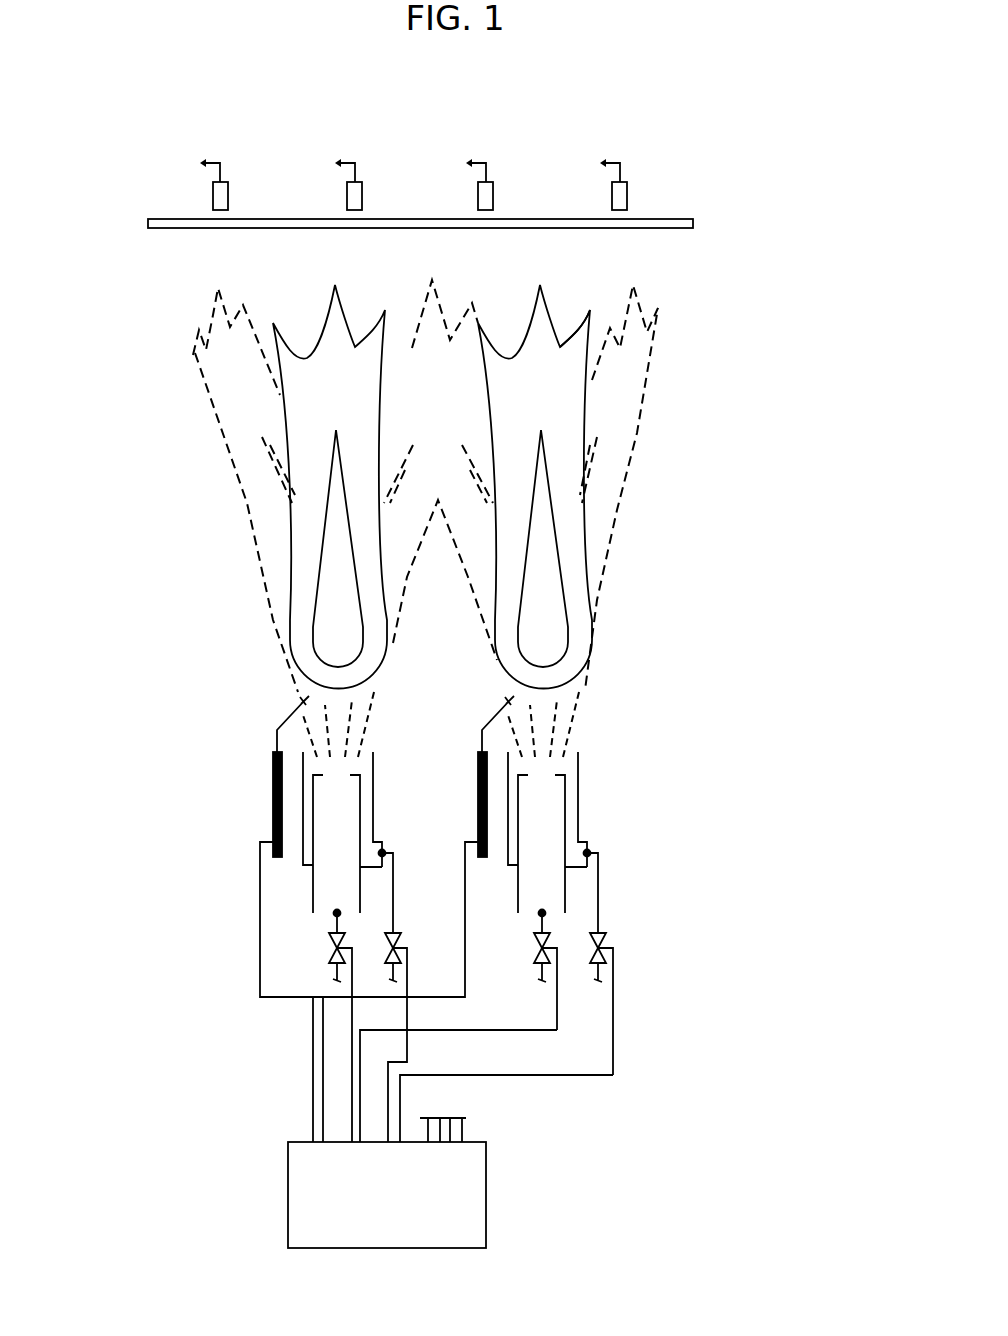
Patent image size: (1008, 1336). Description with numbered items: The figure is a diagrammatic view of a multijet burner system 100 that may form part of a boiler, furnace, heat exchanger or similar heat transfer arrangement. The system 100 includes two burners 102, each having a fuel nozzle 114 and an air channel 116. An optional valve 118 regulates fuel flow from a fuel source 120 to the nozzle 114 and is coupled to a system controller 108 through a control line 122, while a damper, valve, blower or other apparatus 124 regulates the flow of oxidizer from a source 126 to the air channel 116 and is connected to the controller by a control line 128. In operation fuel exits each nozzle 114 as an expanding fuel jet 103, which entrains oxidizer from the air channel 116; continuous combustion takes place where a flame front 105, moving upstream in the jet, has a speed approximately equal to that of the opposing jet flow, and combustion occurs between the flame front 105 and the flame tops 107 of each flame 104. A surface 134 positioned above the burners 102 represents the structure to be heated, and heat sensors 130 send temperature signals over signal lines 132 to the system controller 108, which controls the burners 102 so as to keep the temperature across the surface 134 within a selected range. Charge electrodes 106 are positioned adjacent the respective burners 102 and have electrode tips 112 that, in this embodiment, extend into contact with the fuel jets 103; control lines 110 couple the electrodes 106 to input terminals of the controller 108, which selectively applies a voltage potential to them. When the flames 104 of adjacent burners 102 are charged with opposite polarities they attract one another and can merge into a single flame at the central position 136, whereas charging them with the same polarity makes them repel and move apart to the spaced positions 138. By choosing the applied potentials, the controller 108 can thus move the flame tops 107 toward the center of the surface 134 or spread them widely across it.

The multijet burner system 100 is at (745, 190).
The burner 102 is at (230, 793).
The fuel jet 103 is at (566, 710).
The flame 104 is at (298, 545).
The flame front 105 is at (560, 688).
The charge electrode 106 is at (273, 829).
The flame top 107 is at (572, 295).
The system controller 108 is at (288, 1150).
The control line 110 is at (322, 1045).
The electrode tip 112 is at (277, 738).
The fuel nozzle 114 is at (565, 813).
The air channel 116 is at (578, 828).
The valve 118 is at (537, 945).
The fuel source 120 is at (538, 973).
The control line 122 is at (508, 1030).
The apparatus 124 is at (610, 938).
The source 126 is at (602, 975).
The control line 128 is at (613, 1070).
The heat sensor 130 is at (493, 197).
The signal line 132 is at (477, 163).
The surface 134 is at (430, 218).
The central position 136 is at (405, 278).
The spaced position 138 is at (207, 308).